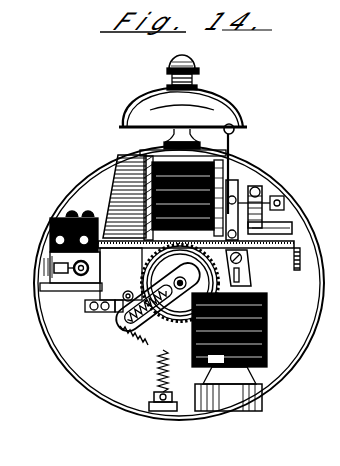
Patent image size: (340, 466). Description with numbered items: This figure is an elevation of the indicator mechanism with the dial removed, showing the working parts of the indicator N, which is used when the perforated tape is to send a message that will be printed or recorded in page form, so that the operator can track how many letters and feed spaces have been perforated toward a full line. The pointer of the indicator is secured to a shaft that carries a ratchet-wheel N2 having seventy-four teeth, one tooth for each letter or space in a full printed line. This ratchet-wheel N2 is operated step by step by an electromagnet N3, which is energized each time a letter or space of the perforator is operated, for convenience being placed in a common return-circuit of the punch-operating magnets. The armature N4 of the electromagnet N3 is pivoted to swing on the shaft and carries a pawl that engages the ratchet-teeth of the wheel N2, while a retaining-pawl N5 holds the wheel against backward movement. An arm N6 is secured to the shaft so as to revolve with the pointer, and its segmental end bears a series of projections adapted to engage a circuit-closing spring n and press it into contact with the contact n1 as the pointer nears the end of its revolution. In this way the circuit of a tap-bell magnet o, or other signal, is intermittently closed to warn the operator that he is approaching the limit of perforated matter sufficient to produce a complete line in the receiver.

The indicator N is at (102, 372).
The circuit-closing spring n is at (95, 294).
The contact n1 is at (64, 273).
The ratchet-wheel N2 is at (200, 309).
The electromagnet N3 is at (268, 322).
The armature N4 is at (250, 281).
The retaining-pawl N5 is at (127, 291).
The arm N6 is at (120, 327).
The tap-bell magnet o is at (182, 146).